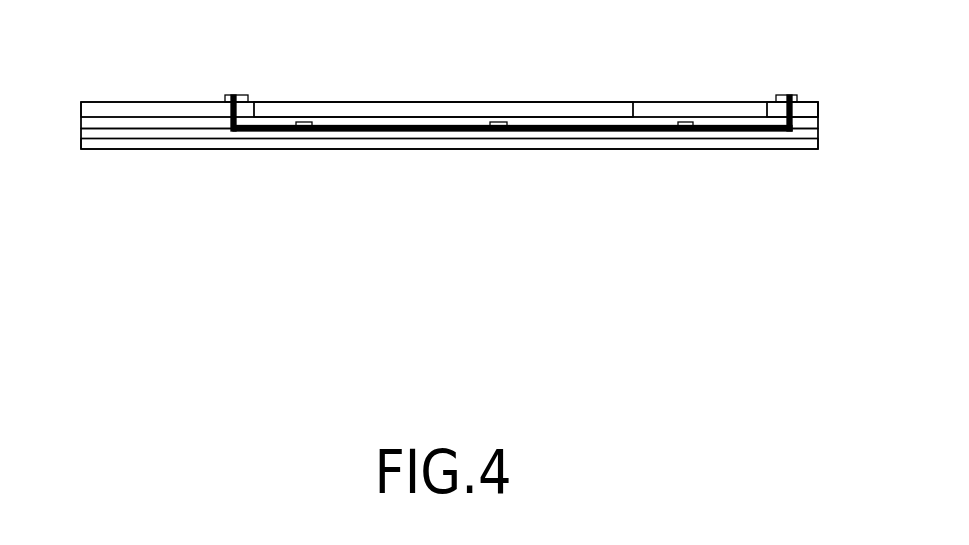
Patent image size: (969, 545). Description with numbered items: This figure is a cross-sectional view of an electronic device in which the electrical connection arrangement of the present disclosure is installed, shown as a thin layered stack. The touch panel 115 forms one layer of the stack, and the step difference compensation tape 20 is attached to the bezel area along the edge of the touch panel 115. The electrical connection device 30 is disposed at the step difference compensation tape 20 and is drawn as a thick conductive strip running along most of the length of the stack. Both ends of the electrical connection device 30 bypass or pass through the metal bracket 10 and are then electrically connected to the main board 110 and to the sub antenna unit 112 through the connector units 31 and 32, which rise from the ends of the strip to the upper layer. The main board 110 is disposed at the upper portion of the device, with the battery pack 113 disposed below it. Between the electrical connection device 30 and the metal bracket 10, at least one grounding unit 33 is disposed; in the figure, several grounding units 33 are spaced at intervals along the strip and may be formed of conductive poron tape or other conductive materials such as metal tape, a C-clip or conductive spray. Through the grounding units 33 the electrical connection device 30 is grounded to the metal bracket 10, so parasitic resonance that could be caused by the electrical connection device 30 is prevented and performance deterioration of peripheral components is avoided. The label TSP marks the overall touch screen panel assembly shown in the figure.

The metal bracket 10 is at (131, 123).
The main board 110 is at (190, 110).
The sub antenna unit 112 is at (815, 110).
The battery pack 113 is at (425, 102).
The touch panel 115 is at (182, 145).
The step difference compensation tape 20 is at (135, 135).
The electrical connection device 30 is at (330, 122).
The connector unit 31 is at (791, 93).
The connector unit 32 is at (233, 92).
The grounding unit 33 is at (306, 131).
The touch screen panel TSP is at (104, 152).